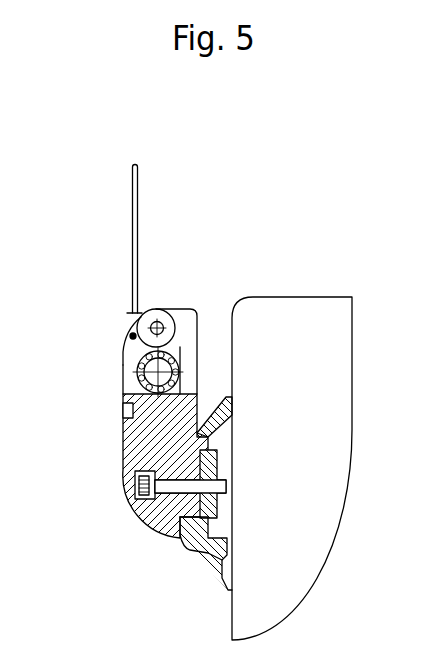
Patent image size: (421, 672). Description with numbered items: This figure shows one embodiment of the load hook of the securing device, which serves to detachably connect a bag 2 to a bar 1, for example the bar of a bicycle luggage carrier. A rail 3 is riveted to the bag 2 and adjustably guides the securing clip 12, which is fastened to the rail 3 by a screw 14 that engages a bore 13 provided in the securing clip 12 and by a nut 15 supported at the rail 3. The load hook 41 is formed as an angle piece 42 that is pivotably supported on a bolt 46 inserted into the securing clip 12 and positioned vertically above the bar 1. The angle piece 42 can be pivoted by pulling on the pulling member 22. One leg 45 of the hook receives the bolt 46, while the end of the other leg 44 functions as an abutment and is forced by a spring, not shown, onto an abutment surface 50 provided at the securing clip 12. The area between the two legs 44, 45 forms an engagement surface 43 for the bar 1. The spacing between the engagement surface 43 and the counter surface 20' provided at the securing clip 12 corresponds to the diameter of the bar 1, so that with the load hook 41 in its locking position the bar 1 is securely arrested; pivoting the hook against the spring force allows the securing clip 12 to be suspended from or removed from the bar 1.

The bar 1 is at (124, 373).
The bag 2 is at (305, 290).
The rail 3 is at (205, 557).
The securing clip 12 is at (128, 452).
The bore 13 is at (142, 516).
The screw 14 is at (133, 486).
The nut 15 is at (220, 508).
The counter surface 20' is at (273, 415).
The pulling member 22 is at (130, 186).
The load hook 41 is at (134, 312).
The angle piece 42 is at (130, 334).
The engagement surface 43 is at (126, 356).
The leg 44 is at (122, 408).
The leg 45 is at (174, 321).
The bolt 46 is at (158, 321).
The abutment surface 50 is at (123, 389).